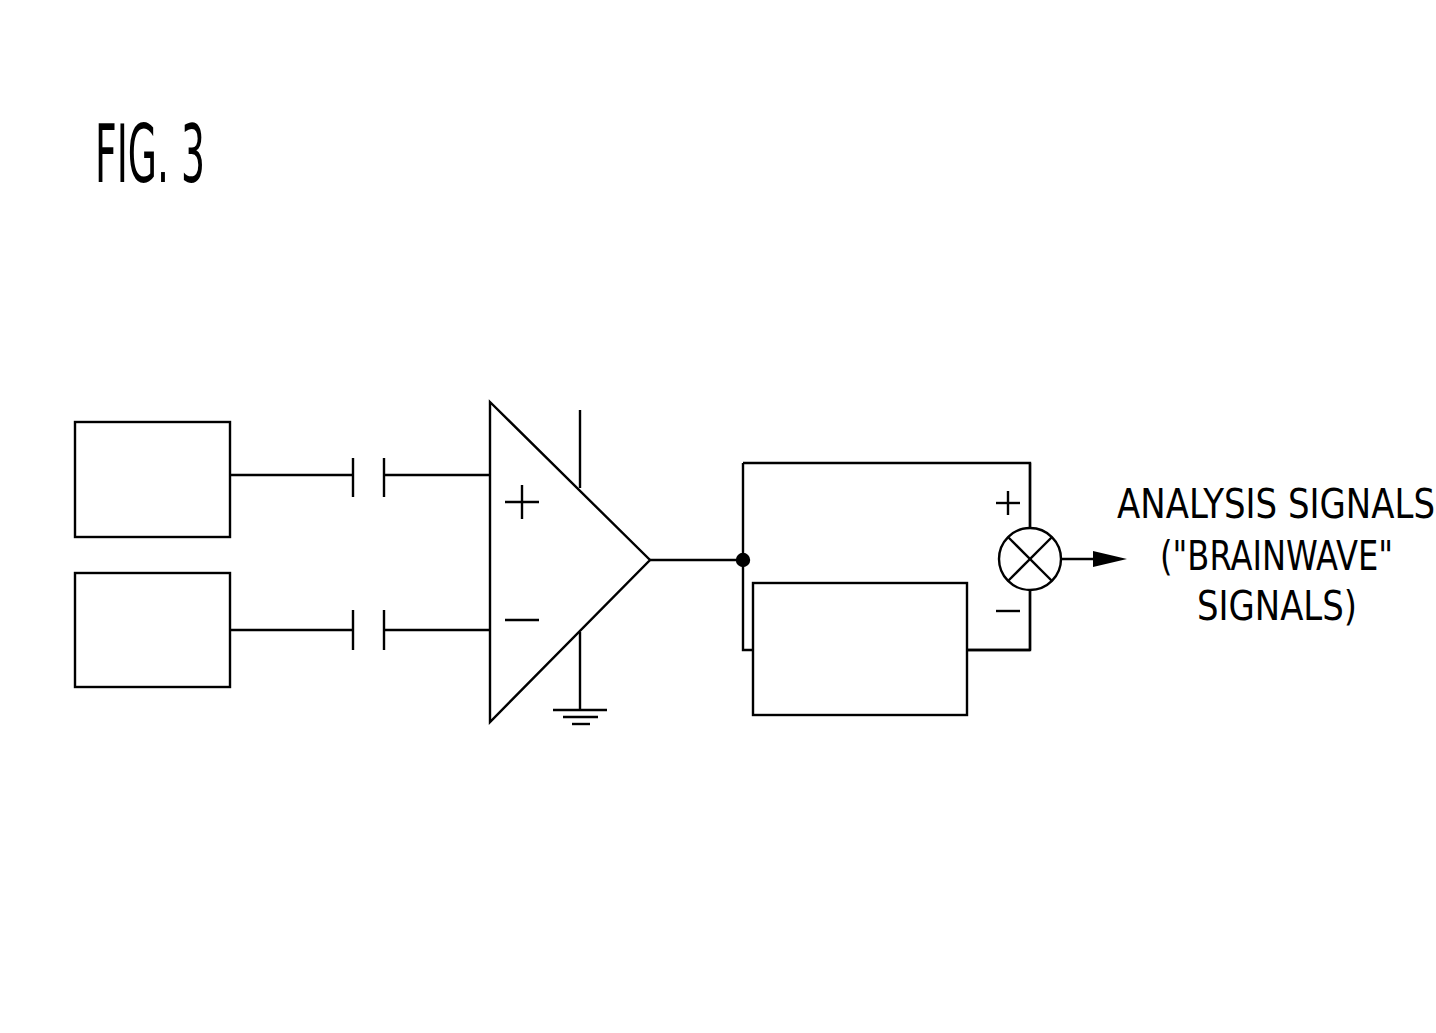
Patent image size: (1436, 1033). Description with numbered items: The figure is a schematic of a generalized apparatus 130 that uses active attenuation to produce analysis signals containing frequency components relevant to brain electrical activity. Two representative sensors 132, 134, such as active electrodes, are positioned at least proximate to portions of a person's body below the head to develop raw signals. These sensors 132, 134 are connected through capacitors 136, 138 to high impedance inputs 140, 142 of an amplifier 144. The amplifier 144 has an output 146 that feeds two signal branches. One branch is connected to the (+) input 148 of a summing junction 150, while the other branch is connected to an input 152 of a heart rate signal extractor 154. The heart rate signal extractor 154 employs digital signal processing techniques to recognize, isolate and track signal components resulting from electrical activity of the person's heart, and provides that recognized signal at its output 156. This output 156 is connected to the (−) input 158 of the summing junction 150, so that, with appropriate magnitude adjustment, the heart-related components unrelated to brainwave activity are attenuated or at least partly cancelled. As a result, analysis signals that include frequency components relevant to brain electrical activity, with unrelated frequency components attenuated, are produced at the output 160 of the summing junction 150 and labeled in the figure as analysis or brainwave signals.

The generalized apparatus 130 is at (882, 392).
The sensor 132 is at (108, 420).
The sensor 134 is at (98, 690).
The capacitor 136 is at (352, 465).
The capacitor 138 is at (352, 625).
The high impedance input 140 is at (455, 473).
The high impedance input 142 is at (467, 630).
The amplifier 144 is at (605, 512).
The output 146 is at (667, 557).
The (+) input 148 is at (1032, 517).
The summing junction 150 is at (999, 556).
The input 152 is at (752, 653).
The heart rate signal extractor 154 is at (808, 583).
The output 156 is at (987, 651).
The (−) input 158 is at (1032, 602).
The output 160 is at (1078, 557).